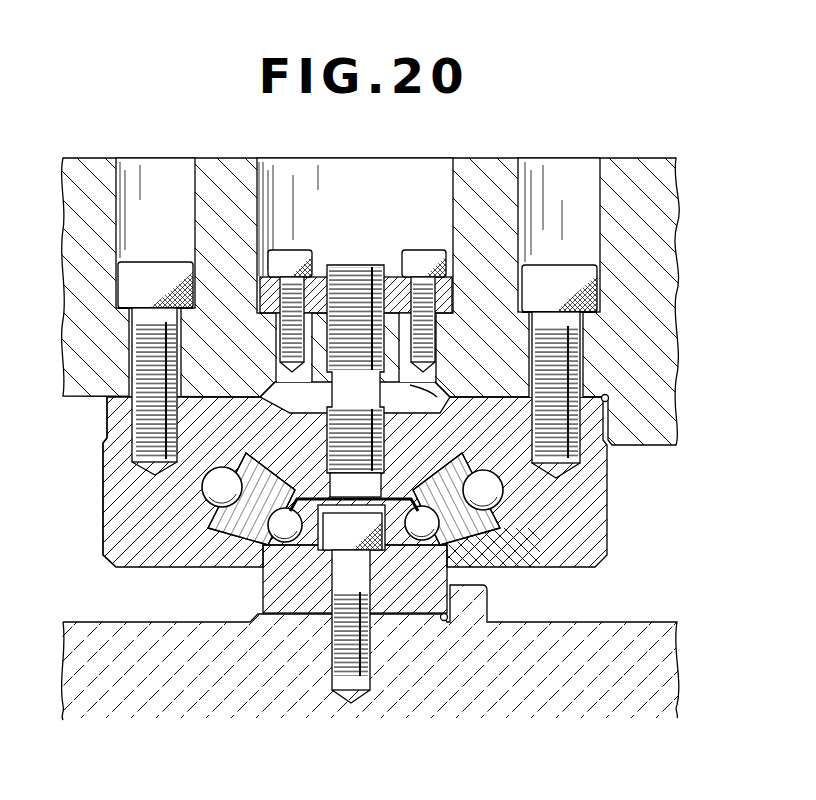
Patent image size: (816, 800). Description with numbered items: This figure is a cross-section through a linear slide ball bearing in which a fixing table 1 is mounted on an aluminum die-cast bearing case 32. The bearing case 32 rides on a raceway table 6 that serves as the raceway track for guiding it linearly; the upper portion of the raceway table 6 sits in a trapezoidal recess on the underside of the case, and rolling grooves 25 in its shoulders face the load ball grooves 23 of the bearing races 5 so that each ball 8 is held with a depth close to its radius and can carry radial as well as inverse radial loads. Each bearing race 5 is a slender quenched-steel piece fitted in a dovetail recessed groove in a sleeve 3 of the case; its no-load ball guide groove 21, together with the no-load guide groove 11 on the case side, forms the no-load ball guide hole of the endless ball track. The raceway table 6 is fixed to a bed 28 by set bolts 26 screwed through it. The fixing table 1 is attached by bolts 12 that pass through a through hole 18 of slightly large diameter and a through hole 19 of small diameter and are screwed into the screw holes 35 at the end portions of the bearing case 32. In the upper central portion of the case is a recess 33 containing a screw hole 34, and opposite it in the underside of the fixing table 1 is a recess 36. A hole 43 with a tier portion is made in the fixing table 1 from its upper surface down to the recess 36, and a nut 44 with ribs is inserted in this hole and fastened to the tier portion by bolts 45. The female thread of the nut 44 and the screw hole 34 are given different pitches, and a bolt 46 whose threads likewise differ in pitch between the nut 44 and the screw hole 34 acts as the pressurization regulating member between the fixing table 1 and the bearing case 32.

The fixing table 1 is at (231, 156).
The sleeve 3 is at (597, 484).
The bearing race 5 is at (543, 572).
The raceway table 6 is at (408, 597).
The ball 8 is at (502, 510).
The no-load guide groove 11 is at (502, 490).
The bolt 12 is at (583, 387).
The through hole 18 is at (195, 190).
The through hole 19 is at (575, 355).
The no-load ball guide groove 21 is at (450, 541).
The load ball groove 23 is at (508, 570).
The rolling groove 25 is at (283, 540).
The set bolt 26 is at (335, 658).
The bed 28 is at (665, 622).
The bearing case 32 is at (117, 533).
The recess 33 is at (270, 382).
The screw hole 34 is at (470, 413).
The screw hole 35 is at (573, 443).
The recess 36 is at (455, 378).
The hole with a tier portion 43 is at (457, 187).
The nut with ribs 44 is at (320, 280).
The bolt 45 is at (290, 262).
The bolt 46 is at (367, 273).